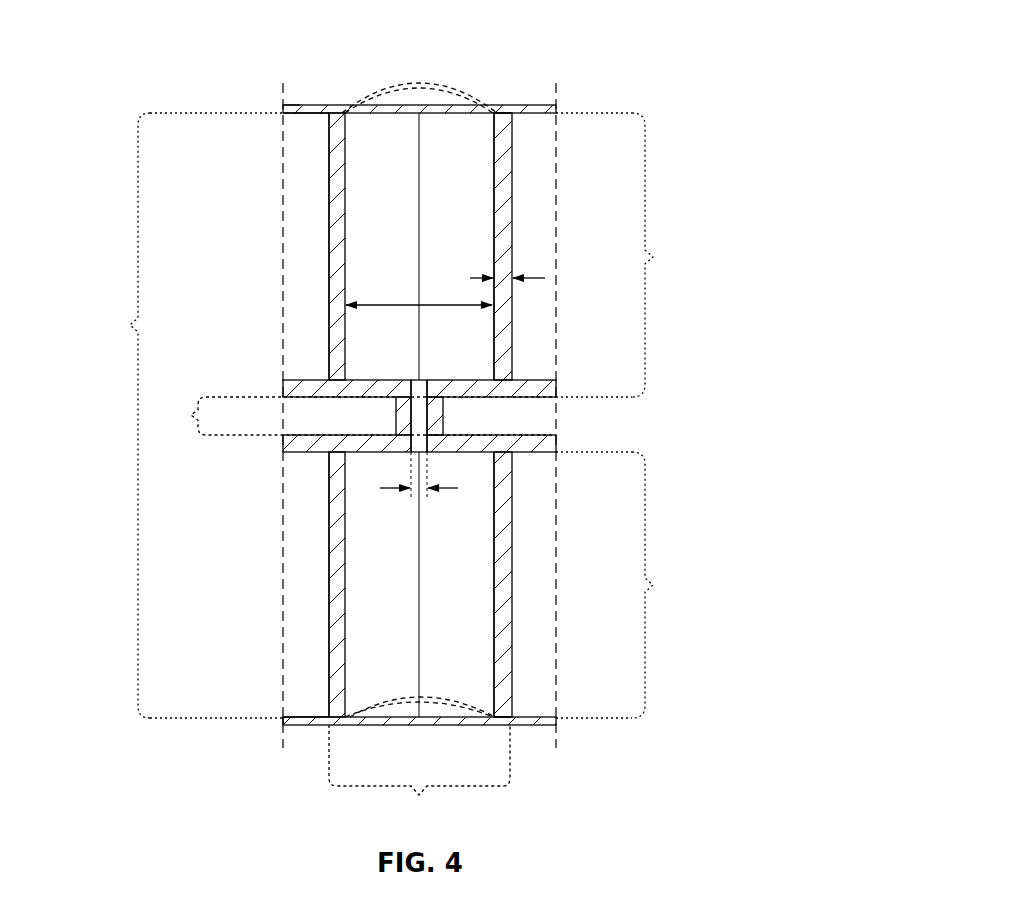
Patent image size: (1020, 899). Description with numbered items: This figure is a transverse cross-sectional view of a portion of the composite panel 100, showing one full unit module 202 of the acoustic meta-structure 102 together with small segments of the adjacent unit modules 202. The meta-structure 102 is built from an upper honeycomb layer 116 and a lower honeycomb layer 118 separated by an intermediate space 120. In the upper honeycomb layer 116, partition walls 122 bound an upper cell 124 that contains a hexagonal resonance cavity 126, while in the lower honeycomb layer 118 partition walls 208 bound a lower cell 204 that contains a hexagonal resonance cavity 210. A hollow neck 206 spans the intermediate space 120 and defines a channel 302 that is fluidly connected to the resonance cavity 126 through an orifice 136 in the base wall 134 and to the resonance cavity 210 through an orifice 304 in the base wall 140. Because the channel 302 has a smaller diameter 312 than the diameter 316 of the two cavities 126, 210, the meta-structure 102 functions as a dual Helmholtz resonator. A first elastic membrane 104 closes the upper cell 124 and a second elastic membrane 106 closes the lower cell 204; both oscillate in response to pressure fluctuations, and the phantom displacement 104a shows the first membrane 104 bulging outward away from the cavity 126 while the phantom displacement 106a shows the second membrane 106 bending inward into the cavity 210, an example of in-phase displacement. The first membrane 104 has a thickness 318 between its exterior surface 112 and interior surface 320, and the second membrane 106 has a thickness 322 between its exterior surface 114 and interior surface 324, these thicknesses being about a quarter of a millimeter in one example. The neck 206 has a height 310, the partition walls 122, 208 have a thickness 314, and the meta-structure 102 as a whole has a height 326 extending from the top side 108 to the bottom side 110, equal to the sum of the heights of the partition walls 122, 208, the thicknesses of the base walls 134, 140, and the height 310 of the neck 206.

The composite panel 100 is at (632, 101).
The acoustic meta-structure 102 is at (238, 254).
The first elastic membrane 104 is at (396, 105).
The phantom displacement of first elastic membrane 104a is at (446, 96).
The second elastic membrane 106 is at (383, 726).
The phantom displacement of second elastic membrane 106a is at (440, 706).
The top side 108 is at (517, 121).
The bottom side 110 is at (518, 710).
The exterior surface 112 is at (331, 105).
The exterior surface 114 is at (316, 726).
The upper honeycomb layer 116 is at (669, 255).
The lower honeycomb layer 118 is at (669, 585).
The intermediate space 120 is at (568, 422).
The partition walls 122 is at (333, 197).
The upper cell 124 is at (330, 155).
The resonance cavity 126 is at (496, 180).
The base wall 134 is at (380, 388).
The orifice 136 is at (427, 378).
The base wall 140 is at (380, 448).
The unit module 202 is at (302, 740).
The lower cell 204 is at (335, 518).
The neck 206 is at (402, 411).
The partition walls 208 is at (337, 560).
The resonance cavity 210 is at (490, 614).
The channel 302 is at (430, 406).
The orifice 304 is at (427, 455).
The height 310 is at (347, 416).
The diameter 312 is at (397, 490).
The thickness 314 is at (527, 278).
The diameter 316 is at (340, 301).
The thickness 318 is at (280, 105).
The interior surface 320 is at (315, 117).
The thickness 322 is at (278, 724).
The interior surface 324 is at (318, 716).
The height 326 is at (113, 415).